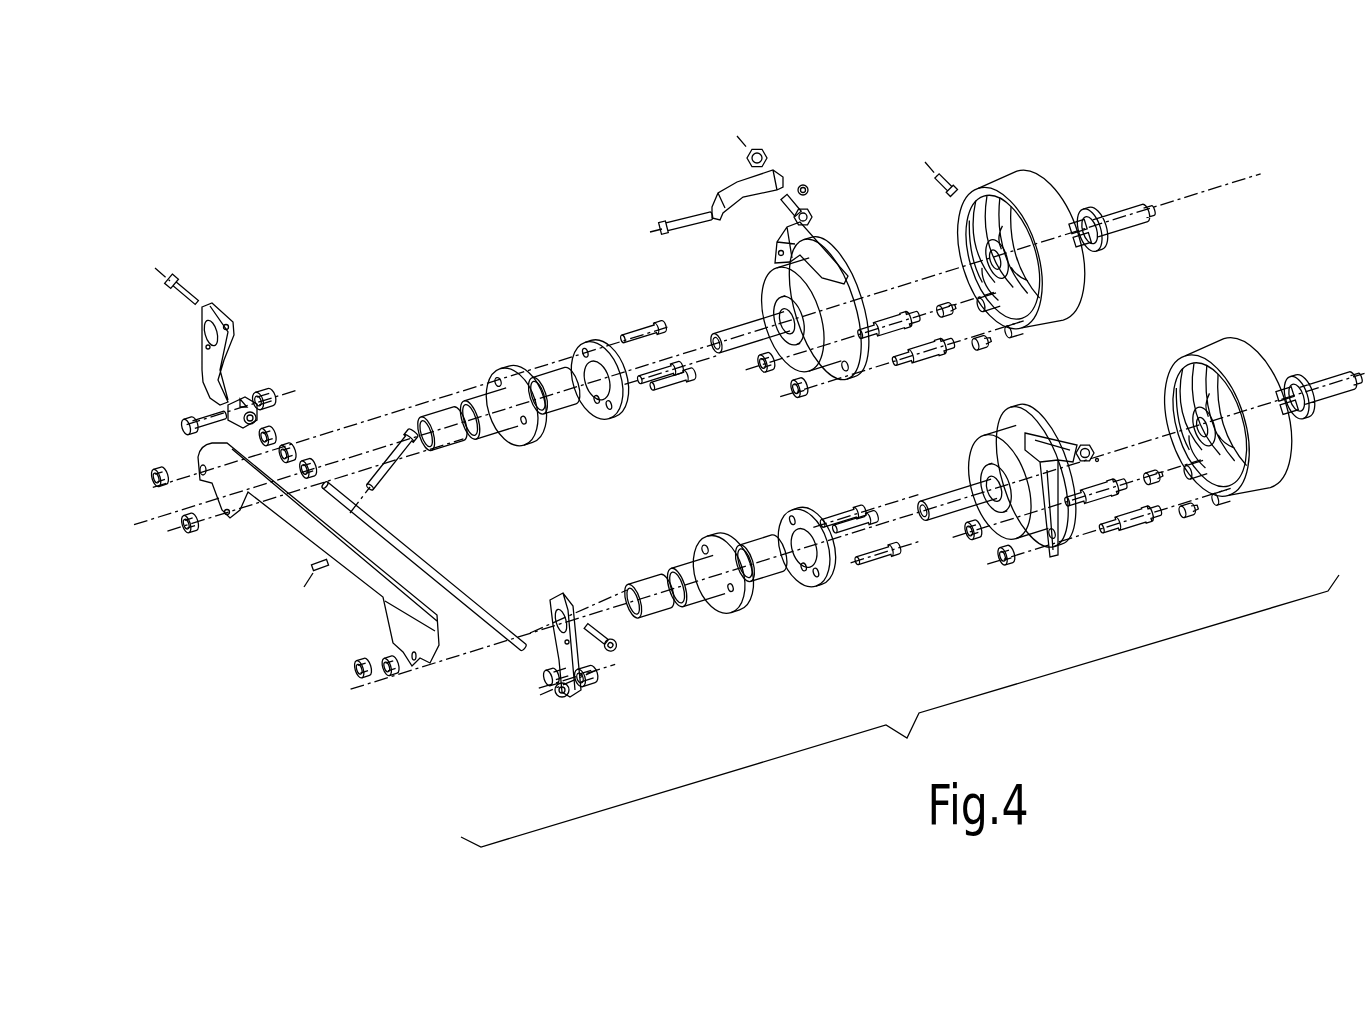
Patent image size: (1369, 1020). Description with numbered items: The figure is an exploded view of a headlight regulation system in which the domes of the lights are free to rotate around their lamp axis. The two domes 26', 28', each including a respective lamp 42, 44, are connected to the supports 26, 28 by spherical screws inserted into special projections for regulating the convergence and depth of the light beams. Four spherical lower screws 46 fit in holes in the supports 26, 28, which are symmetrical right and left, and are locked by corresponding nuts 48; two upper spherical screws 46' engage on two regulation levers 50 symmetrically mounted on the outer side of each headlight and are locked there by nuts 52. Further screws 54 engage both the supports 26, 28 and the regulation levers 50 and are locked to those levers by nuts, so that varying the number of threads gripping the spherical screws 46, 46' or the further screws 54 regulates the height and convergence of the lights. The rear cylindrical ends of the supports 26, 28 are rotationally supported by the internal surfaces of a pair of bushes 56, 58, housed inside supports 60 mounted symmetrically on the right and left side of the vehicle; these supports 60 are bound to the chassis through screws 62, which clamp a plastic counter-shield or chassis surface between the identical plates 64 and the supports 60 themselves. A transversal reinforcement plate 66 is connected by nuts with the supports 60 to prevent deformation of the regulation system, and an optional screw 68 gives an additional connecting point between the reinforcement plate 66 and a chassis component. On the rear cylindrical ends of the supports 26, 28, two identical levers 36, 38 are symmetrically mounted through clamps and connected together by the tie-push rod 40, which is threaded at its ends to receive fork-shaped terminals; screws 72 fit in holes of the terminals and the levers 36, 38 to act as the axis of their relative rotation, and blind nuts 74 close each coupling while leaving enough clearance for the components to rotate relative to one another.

The support 26 is at (993, 476).
The dome 26' is at (1227, 409).
The support 28 is at (796, 318).
The dome 28' is at (1020, 243).
The lever 36 is at (580, 648).
The lever 38 is at (200, 345).
The tie-push rod 40 is at (448, 590).
The lamp 42 is at (1325, 386).
The lamp 44 is at (1136, 206).
The spherical lower screw 46 is at (1009, 444).
The upper spherical screw 46' is at (826, 199).
The nut 48 is at (765, 373).
The regulation lever 50 is at (728, 182).
The nut 52 is at (765, 152).
The further screw 54 is at (680, 215).
The bush 56 is at (549, 378).
The bush 58 is at (436, 412).
The support 60 is at (480, 395).
The screw 62 is at (642, 325).
The plate 64 is at (590, 345).
The transversal reinforcement plate 66 is at (293, 515).
The screw 68 is at (393, 484).
The screw 72 is at (197, 410).
The blind nut 74 is at (268, 395).